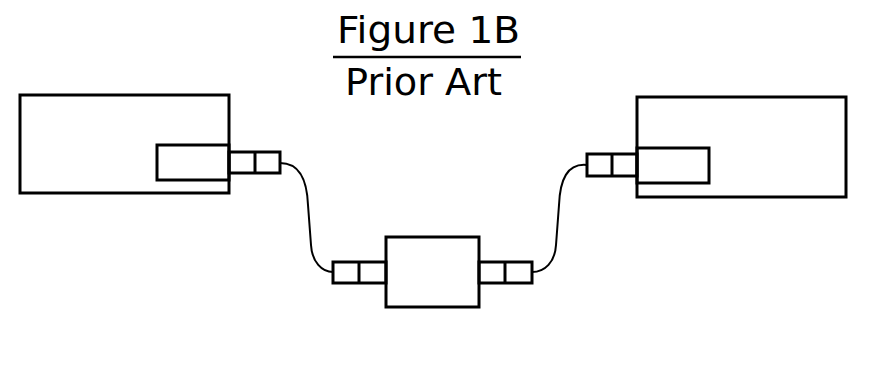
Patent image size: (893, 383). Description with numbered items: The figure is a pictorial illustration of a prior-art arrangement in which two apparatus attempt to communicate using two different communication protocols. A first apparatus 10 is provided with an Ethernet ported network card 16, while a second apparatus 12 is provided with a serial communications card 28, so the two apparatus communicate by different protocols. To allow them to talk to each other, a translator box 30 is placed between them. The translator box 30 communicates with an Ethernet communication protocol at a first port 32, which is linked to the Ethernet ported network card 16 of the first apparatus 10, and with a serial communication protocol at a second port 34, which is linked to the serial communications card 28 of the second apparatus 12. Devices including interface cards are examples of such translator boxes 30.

The first apparatus 10 is at (76, 197).
The second apparatus 12 is at (767, 198).
The Ethernet ported network card 16 is at (178, 181).
The serial communications card 28 is at (690, 184).
The translator box 30 is at (441, 308).
The first port 32 is at (366, 285).
The second port 34 is at (493, 285).